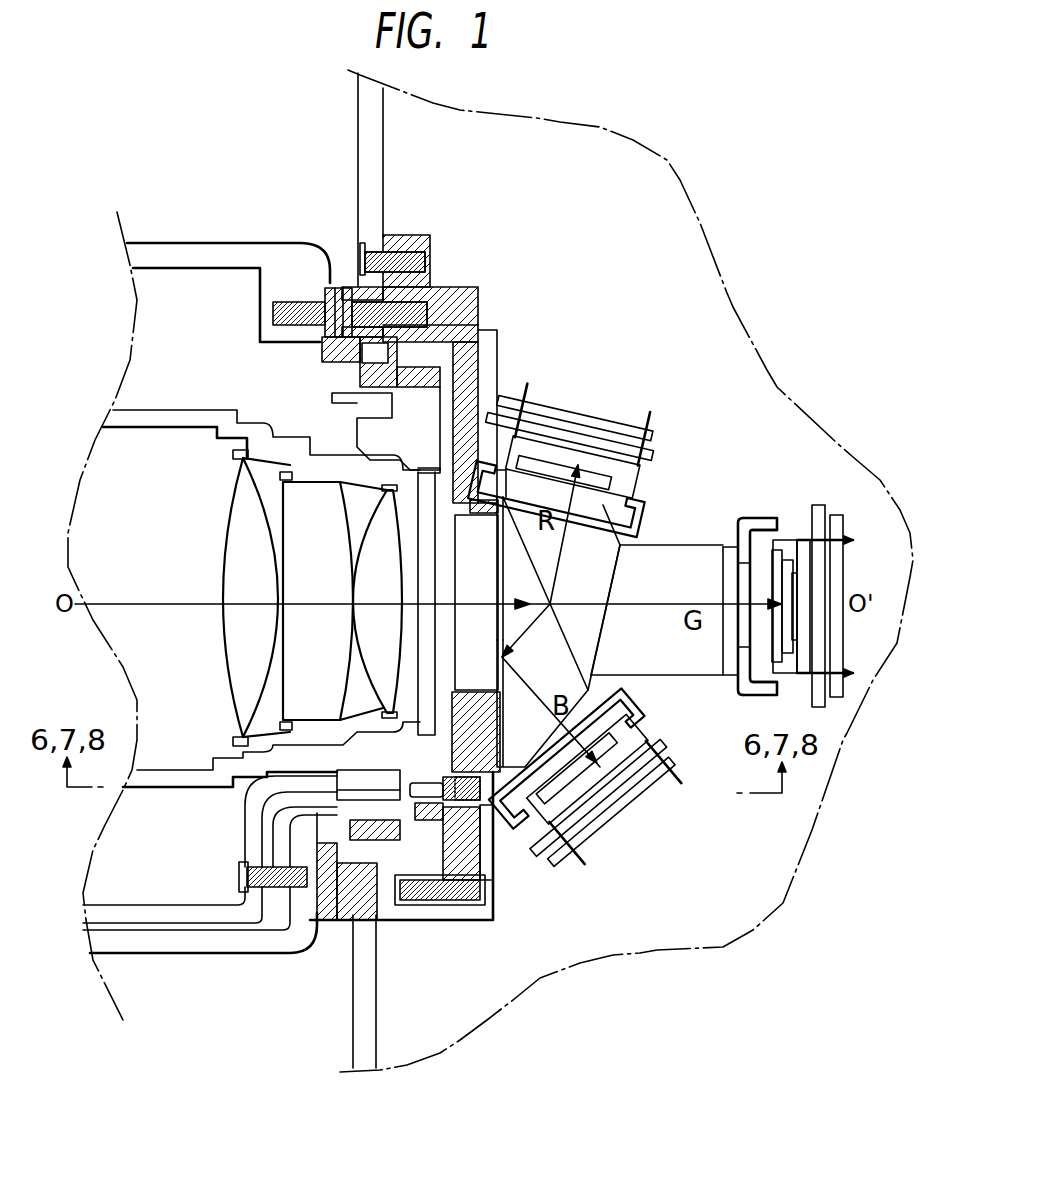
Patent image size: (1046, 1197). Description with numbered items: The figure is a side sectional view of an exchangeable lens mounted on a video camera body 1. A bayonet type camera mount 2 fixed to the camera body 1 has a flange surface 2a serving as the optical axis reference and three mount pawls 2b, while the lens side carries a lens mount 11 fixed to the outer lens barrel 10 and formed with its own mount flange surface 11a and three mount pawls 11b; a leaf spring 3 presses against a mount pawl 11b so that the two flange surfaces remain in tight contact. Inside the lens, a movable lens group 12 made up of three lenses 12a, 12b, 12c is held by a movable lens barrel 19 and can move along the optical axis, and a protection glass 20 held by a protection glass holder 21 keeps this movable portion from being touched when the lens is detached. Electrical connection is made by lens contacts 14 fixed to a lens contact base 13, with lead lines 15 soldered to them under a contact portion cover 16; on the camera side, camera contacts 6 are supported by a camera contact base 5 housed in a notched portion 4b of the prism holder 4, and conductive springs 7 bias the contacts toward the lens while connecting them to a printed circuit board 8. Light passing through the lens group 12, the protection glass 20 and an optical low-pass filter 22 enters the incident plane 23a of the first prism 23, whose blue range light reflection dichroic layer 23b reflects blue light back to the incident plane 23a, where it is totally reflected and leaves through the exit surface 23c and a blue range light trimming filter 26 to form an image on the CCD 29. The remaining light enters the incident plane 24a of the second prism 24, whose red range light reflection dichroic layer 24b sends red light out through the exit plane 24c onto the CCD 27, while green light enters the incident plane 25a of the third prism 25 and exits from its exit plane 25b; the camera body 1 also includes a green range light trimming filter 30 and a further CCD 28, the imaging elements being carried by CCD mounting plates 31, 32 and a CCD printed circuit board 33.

The video camera body 1 is at (370, 160).
The camera mount 2 is at (423, 287).
The flange surface 2a is at (322, 915).
The mount pawls 2b is at (480, 293).
The leaf spring 3 is at (480, 325).
The prism holder 4 is at (480, 347).
The notched portion 4b is at (497, 775).
The camera contact base 5 is at (490, 830).
The camera contacts 6 is at (462, 885).
The conductive springs 7 is at (492, 850).
The printed circuit board 8 is at (500, 812).
The outer lens barrel 10 is at (250, 257).
The lens mount 11 is at (320, 352).
The mount flange surface 11a is at (343, 905).
The mount pawls 11b is at (413, 412).
The lens group 12 is at (285, 597).
The lens 12a is at (235, 621).
The lens 12b is at (290, 640).
The lens 12c is at (343, 676).
The lens contact base 13 is at (410, 792).
The lens contacts 14 is at (370, 800).
The lead lines 15 is at (238, 918).
The contact portion cover 16 is at (252, 837).
The movable lens barrel 19 is at (200, 412).
The protection glass 20 is at (357, 463).
The protection glass holder 21 is at (502, 385).
The optical low-pass filter 22 is at (460, 557).
The first prism 23 is at (606, 655).
The incident plane 23a is at (500, 658).
The blue range light reflection dichroic layer 23b is at (553, 540).
The exit surface 23c is at (533, 757).
The second prism 24 is at (607, 616).
The incident plane 24a is at (555, 598).
The red range light reflection dichroic layer 24b is at (510, 652).
The exit plane 24c is at (617, 540).
The third prism 25 is at (670, 581).
The incident plane 25a is at (603, 623).
The exit plane 25b is at (720, 580).
The blue range light trimming filter 26 is at (627, 782).
The CCD 27 is at (678, 497).
The CCD 28 is at (775, 540).
The CCD 29 is at (657, 716).
The green range light trimming filter 30 is at (738, 675).
The CCD mounting plate 31 is at (657, 498).
The CCD mounting plate 32 is at (627, 448).
The CCD printed circuit board 33 is at (605, 422).